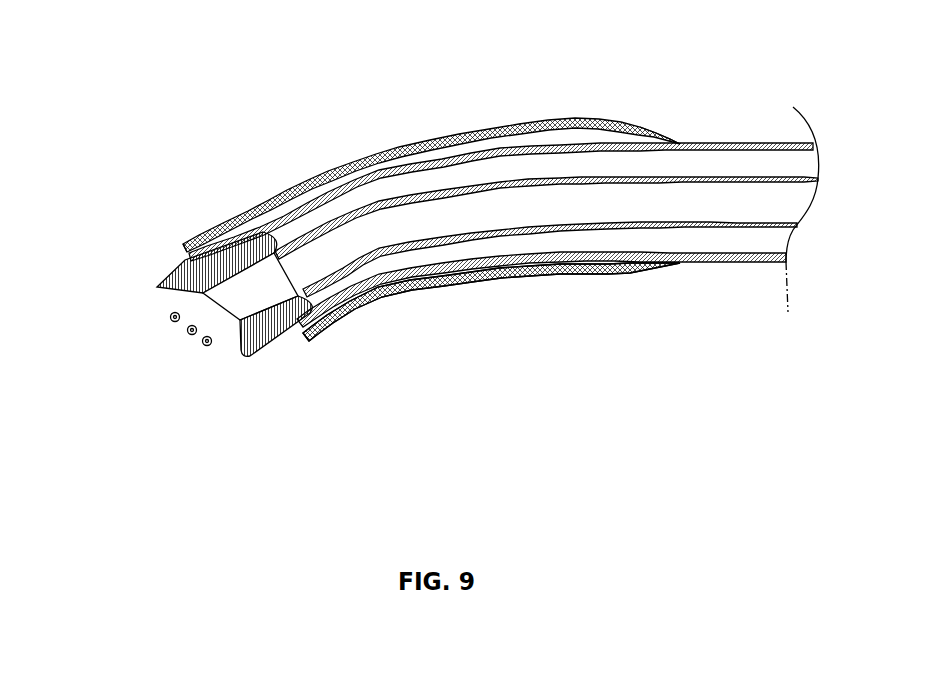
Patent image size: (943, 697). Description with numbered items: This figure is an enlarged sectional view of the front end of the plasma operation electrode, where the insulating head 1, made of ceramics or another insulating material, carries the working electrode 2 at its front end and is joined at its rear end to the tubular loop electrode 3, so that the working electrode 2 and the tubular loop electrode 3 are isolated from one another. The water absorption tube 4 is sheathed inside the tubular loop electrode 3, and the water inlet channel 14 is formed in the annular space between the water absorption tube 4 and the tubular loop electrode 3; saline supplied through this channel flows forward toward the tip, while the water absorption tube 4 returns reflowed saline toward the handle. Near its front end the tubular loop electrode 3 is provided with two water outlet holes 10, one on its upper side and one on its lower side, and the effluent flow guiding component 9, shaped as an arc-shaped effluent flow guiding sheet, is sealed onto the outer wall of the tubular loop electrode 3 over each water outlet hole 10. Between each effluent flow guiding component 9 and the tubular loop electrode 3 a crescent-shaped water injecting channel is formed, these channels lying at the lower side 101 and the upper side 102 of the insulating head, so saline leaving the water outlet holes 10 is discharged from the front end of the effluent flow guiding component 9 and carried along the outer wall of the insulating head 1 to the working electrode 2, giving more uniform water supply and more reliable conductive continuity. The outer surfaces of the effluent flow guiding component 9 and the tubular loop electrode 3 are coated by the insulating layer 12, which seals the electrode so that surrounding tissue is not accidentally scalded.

The insulating head 1 is at (156, 295).
The working electrode 2 is at (186, 333).
The tubular loop electrode 3 is at (395, 288).
The water absorption tube 4 is at (697, 224).
The effluent flow guiding component 9 is at (370, 162).
The water outlet hole 10 is at (598, 146).
The insulating layer 12 is at (678, 134).
The water inlet channel 14 is at (427, 180).
The lower side of the insulating head 101 is at (304, 347).
The upper side of the insulating head 102 is at (184, 254).